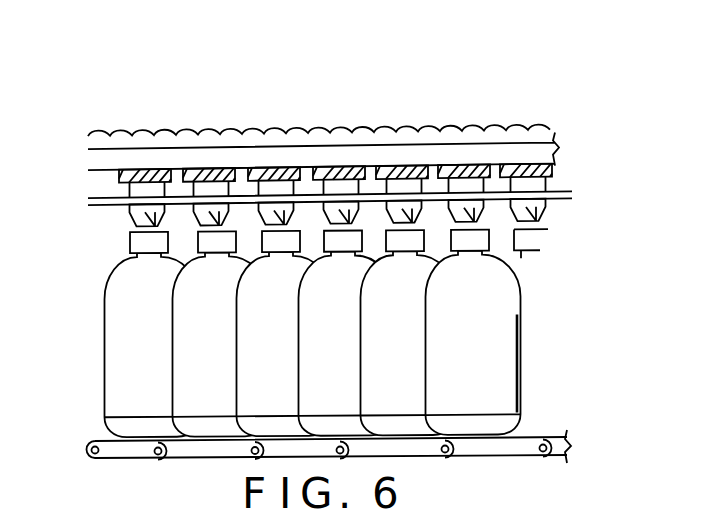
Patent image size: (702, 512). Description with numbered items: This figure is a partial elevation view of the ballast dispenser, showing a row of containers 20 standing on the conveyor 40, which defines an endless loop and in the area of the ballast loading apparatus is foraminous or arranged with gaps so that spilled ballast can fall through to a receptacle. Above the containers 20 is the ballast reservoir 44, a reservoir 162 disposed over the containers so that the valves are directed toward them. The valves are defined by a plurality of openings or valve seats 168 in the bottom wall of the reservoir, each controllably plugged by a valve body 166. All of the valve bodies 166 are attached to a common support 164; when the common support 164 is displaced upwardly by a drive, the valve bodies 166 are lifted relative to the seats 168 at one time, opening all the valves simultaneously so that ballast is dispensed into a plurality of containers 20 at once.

The container 20 is at (507, 354).
The conveyor 40 is at (502, 447).
The ballast reservoir 44 is at (458, 134).
The reservoir 162 is at (573, 192).
The common support 164 is at (108, 158).
The valve body 166 is at (138, 210).
The valve seat 168 is at (128, 189).